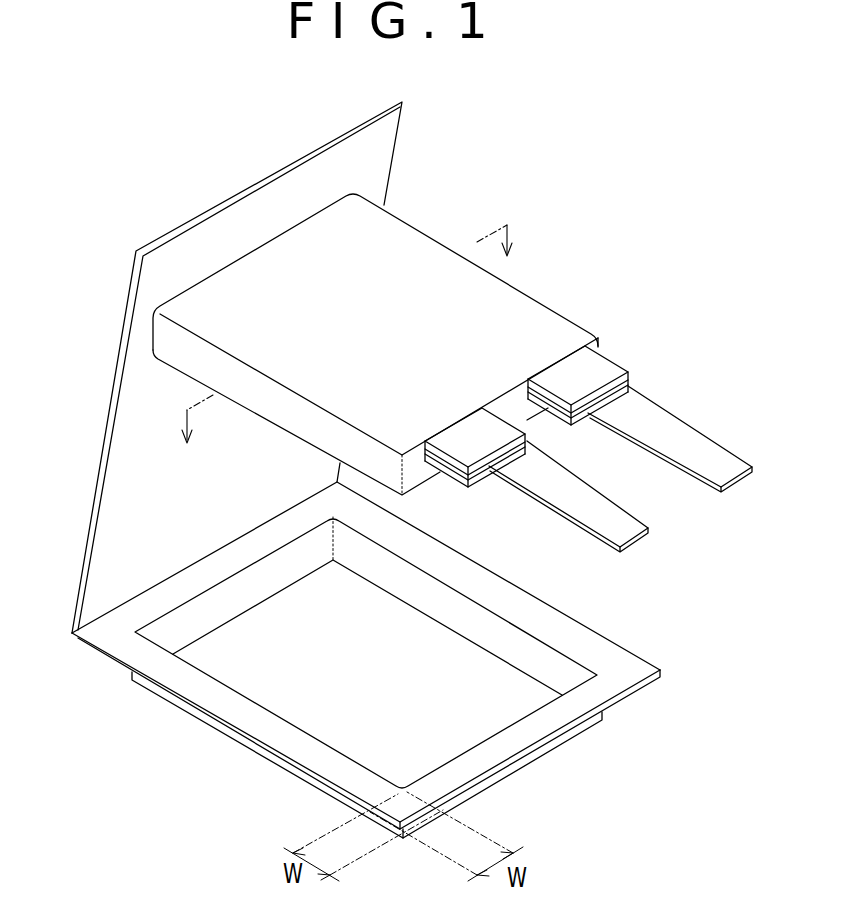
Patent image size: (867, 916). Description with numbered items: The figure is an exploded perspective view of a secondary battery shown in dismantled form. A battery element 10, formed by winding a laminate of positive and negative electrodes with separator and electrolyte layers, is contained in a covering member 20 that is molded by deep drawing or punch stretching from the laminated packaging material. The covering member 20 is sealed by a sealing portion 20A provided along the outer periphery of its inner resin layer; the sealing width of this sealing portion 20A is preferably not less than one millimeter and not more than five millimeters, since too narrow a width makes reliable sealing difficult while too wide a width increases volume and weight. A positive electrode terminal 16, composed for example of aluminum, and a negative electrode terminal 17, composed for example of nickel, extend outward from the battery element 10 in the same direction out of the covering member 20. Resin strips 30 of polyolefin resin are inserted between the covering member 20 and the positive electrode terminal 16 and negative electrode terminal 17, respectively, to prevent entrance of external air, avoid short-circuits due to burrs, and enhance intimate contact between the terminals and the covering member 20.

The battery element 10 is at (583, 293).
The positive electrode terminal 16 is at (572, 490).
The negative electrode terminal 17 is at (673, 428).
The resin strips 30 is at (500, 433).
The covering member 20 is at (437, 650).
The sealing portion 20A is at (590, 653).